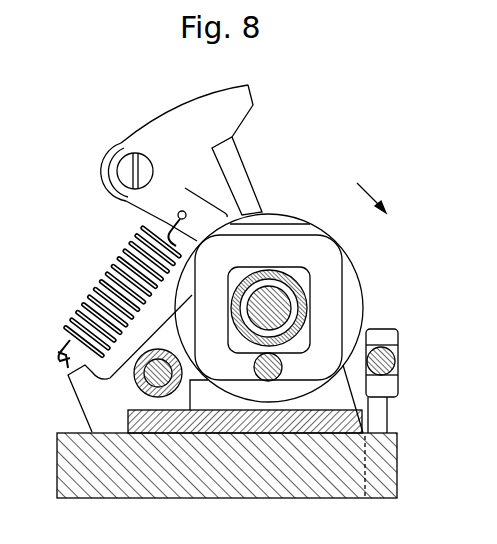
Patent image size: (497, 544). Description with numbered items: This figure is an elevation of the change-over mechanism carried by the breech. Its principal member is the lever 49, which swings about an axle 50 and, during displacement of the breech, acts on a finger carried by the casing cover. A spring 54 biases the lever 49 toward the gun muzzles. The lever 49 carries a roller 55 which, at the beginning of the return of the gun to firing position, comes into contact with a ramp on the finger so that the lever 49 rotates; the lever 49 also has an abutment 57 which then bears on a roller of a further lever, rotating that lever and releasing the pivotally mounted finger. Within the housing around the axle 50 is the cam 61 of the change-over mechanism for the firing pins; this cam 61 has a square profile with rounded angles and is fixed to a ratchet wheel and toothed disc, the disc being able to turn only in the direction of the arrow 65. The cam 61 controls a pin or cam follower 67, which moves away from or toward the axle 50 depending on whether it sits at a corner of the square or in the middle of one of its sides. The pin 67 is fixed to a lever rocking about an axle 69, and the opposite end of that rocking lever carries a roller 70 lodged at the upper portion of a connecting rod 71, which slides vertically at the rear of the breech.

The lever 49 is at (230, 163).
The axle 50 is at (277, 271).
The spring 54 is at (96, 286).
The roller 55 is at (108, 186).
The abutment 57 is at (173, 200).
The cam 61 is at (297, 238).
The arrow 65 is at (370, 194).
The pin or cam follower 67 is at (282, 367).
The axle 69 is at (137, 385).
The roller 70 is at (391, 362).
The connecting rod 71 is at (378, 413).